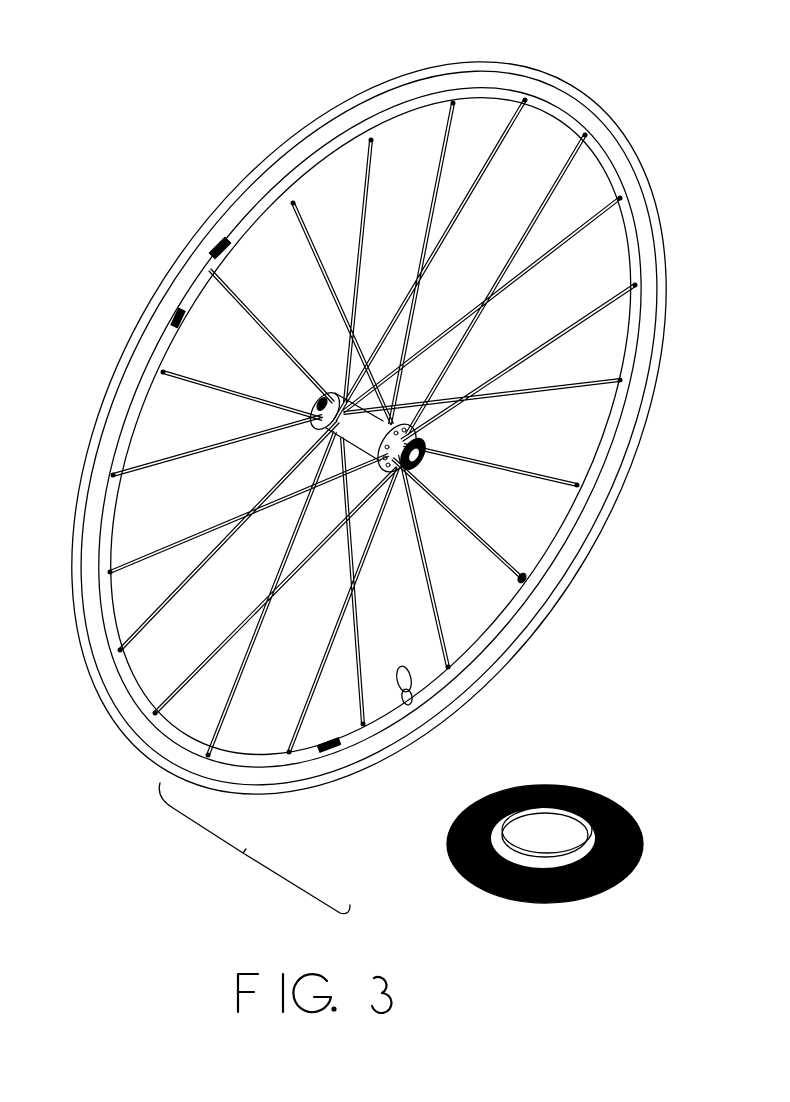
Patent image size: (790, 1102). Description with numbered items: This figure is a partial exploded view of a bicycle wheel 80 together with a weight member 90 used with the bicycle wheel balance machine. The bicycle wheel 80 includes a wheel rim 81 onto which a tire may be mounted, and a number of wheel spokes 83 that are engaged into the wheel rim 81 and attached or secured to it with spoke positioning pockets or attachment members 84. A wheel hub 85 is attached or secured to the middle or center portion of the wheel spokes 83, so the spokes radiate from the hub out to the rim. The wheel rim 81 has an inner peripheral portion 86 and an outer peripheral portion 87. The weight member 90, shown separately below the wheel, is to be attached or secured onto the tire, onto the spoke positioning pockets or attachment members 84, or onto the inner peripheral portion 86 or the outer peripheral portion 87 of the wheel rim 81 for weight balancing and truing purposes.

The bicycle wheel 80 is at (379, 97).
The wheel rim 81 is at (667, 312).
The wheel spokes 83 is at (197, 662).
The spoke positioning pockets or attachment members 84 is at (528, 579).
The wheel hub 85 is at (420, 440).
The inner peripheral portion 86 is at (337, 750).
The outer peripheral portion 87 is at (180, 317).
The weight member 90 is at (630, 812).